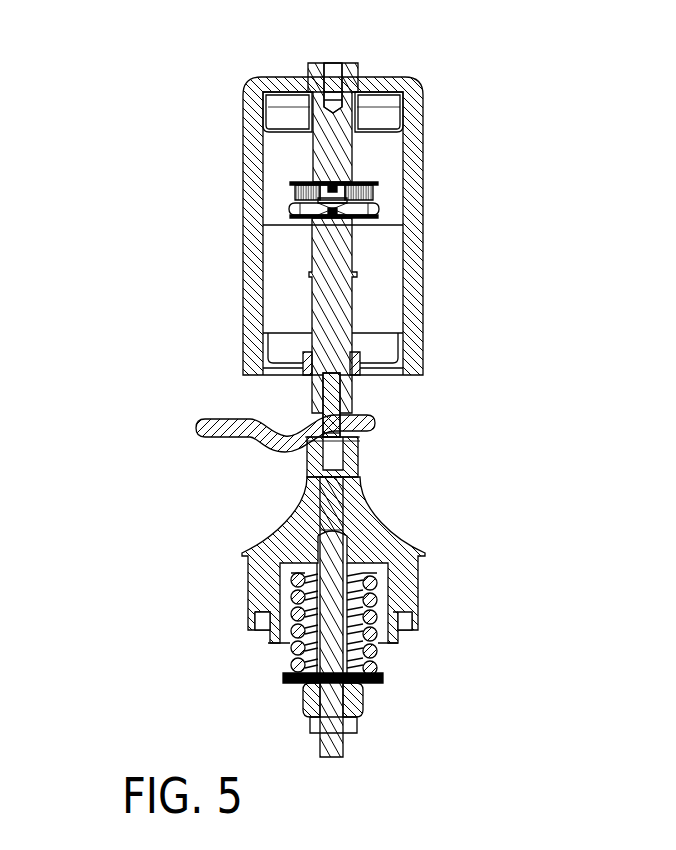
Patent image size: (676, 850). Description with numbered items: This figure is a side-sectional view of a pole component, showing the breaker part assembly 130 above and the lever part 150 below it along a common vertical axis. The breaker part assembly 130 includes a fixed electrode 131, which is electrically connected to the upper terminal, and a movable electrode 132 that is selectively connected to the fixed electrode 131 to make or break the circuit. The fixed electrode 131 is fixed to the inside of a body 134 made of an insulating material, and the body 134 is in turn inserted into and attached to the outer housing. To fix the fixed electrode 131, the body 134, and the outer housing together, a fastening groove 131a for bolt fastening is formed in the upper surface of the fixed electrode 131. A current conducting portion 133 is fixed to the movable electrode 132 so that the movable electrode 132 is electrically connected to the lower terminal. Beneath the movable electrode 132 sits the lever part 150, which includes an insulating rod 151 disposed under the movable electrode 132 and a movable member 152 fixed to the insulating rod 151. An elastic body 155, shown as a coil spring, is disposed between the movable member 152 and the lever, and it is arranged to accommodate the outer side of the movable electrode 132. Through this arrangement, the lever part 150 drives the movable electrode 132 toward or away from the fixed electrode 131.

The breaker part assembly 130 is at (107, 230).
The fixed electrode 131 is at (327, 158).
The fastening groove 131a is at (328, 72).
The movable electrode 132 is at (327, 327).
The current conducting portion 133 is at (205, 420).
The body 134 is at (250, 268).
The lever part 150 is at (509, 593).
The insulating rod 151 is at (402, 575).
The movable member 152 is at (380, 615).
The elastic body 155 is at (380, 663).